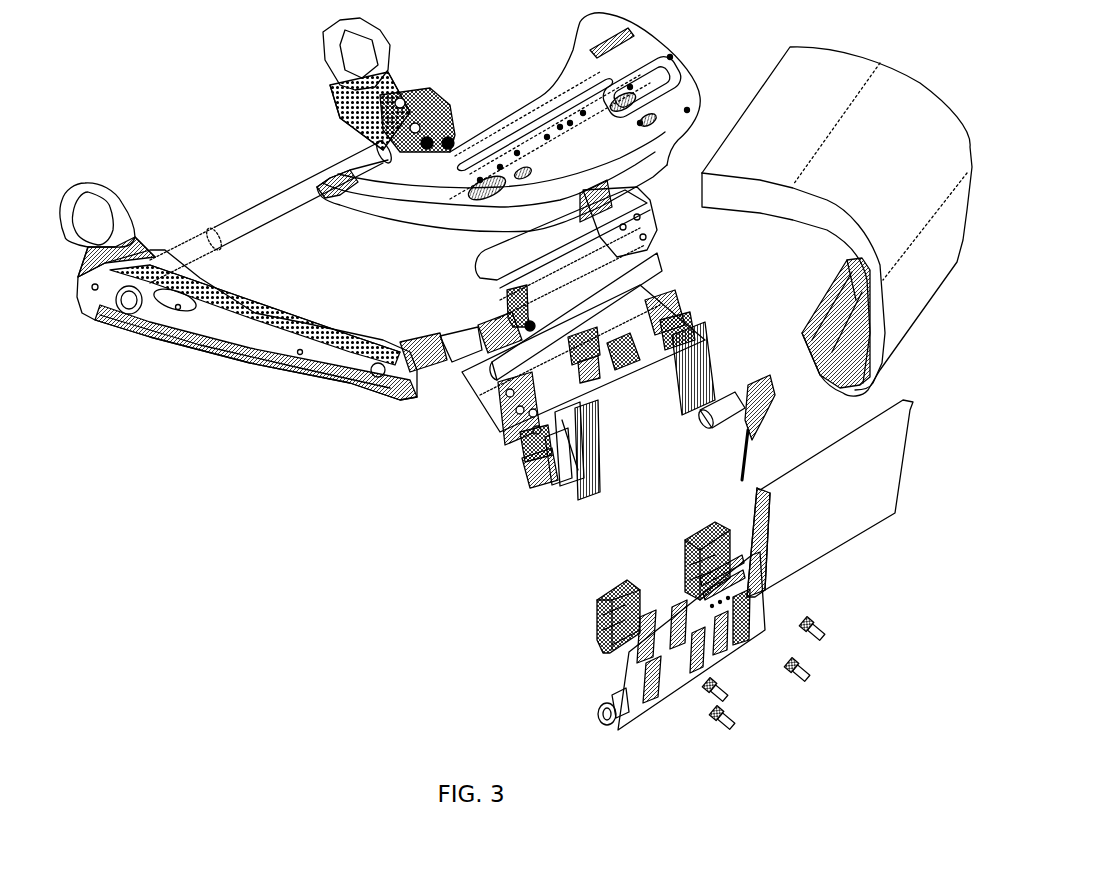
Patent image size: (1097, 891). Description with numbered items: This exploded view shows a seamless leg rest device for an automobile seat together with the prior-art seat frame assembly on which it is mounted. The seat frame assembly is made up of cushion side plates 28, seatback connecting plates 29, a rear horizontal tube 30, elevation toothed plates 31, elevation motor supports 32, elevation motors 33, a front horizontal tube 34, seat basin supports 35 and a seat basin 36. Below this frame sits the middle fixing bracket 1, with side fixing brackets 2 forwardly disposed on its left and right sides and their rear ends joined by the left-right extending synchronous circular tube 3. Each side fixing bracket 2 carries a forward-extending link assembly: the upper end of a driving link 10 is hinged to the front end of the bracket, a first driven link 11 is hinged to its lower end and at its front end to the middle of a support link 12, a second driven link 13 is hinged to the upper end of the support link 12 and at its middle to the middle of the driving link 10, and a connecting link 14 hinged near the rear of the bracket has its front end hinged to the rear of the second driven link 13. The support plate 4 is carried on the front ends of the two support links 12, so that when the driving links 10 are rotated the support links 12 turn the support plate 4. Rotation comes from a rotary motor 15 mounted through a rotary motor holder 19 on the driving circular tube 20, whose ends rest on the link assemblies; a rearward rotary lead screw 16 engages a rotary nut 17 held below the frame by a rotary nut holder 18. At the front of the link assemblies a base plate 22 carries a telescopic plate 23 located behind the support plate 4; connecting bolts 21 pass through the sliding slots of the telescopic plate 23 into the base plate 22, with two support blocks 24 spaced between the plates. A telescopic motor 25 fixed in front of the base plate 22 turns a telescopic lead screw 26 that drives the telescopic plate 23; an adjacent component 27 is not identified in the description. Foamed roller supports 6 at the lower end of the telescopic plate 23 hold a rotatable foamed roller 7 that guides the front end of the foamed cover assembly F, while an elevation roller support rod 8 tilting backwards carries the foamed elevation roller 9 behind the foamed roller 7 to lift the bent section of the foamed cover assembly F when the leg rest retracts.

The foamed cover assembly F is at (832, 70).
The middle fixing bracket 1 is at (490, 259).
The side fixing brackets 2 is at (492, 380).
The synchronous circular tube 3 is at (607, 288).
The support plate 4 is at (860, 518).
The foamed roller supports 6 is at (605, 705).
The foamed roller 7 is at (617, 702).
The elevation roller support rod 8 is at (552, 447).
The foamed elevation roller 9 is at (573, 432).
The driving link 10 is at (657, 318).
The first driven link 11 is at (523, 442).
The support link 12 is at (532, 463).
The second driven link 13 is at (668, 332).
The connecting link 14 is at (512, 415).
The rotary motor 15 is at (575, 362).
The rotary lead screw 16 is at (500, 340).
The rotary nut 17 is at (530, 325).
The rotary nut holder 18 is at (512, 303).
The rotary motor holder 19 is at (585, 373).
The driving circular tube 20 is at (627, 352).
The connecting bolts 21 is at (823, 625).
The base plate 22 is at (600, 425).
The telescopic plate 23 is at (730, 650).
The support blocks 24 is at (600, 625).
The telescopic motor 25 is at (727, 420).
The telescopic lead screw 26 is at (748, 463).
The bracket 27 is at (768, 432).
The cushion side plates 28 is at (223, 330).
The seatback connecting plates 29 is at (347, 72).
The rear horizontal tube 30 is at (237, 228).
The elevation toothed plates 31 is at (383, 120).
The elevation motor supports 32 is at (427, 143).
The elevation motors 33 is at (448, 143).
The front horizontal tube 34 is at (418, 352).
The seat basin supports 35 is at (443, 353).
The seat basin 36 is at (633, 55).